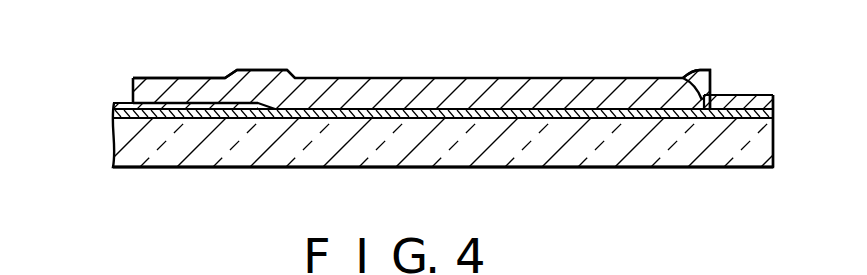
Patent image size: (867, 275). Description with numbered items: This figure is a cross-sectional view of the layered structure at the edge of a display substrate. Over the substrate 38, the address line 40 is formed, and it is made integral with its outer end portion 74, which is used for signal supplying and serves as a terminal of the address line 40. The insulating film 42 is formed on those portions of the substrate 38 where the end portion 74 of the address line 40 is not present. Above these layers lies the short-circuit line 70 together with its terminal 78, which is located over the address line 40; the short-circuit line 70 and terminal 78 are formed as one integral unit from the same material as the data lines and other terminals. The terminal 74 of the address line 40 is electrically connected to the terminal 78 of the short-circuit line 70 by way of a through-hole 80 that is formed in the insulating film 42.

The substrate 38 is at (571, 152).
The outer end portion 74 is at (307, 120).
The insulating film 42 is at (116, 105).
The short-circuit line 70 is at (161, 98).
The terminal 78 is at (454, 96).
The through-hole 80 is at (691, 101).
The address line 40 is at (703, 113).